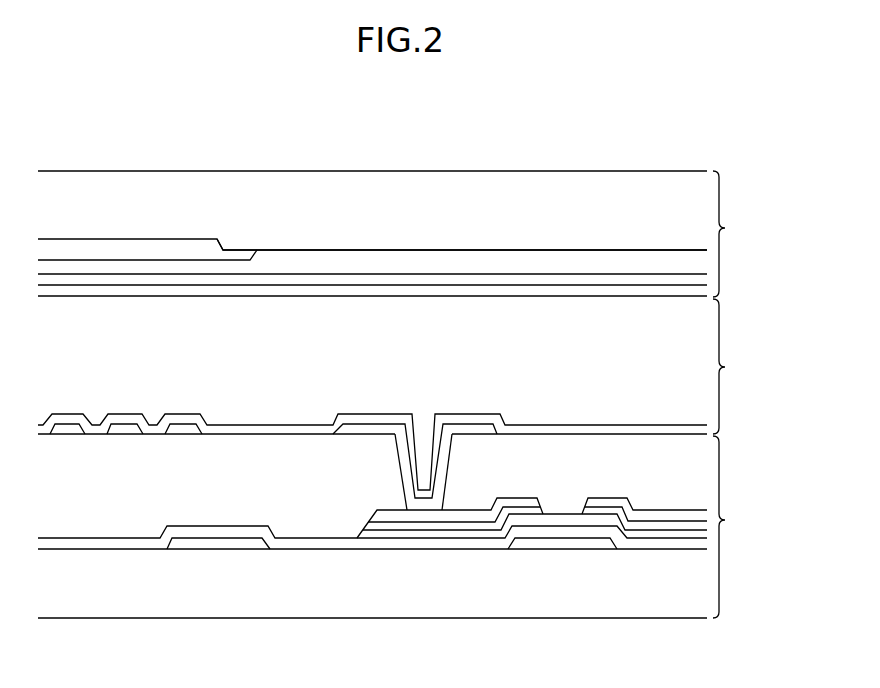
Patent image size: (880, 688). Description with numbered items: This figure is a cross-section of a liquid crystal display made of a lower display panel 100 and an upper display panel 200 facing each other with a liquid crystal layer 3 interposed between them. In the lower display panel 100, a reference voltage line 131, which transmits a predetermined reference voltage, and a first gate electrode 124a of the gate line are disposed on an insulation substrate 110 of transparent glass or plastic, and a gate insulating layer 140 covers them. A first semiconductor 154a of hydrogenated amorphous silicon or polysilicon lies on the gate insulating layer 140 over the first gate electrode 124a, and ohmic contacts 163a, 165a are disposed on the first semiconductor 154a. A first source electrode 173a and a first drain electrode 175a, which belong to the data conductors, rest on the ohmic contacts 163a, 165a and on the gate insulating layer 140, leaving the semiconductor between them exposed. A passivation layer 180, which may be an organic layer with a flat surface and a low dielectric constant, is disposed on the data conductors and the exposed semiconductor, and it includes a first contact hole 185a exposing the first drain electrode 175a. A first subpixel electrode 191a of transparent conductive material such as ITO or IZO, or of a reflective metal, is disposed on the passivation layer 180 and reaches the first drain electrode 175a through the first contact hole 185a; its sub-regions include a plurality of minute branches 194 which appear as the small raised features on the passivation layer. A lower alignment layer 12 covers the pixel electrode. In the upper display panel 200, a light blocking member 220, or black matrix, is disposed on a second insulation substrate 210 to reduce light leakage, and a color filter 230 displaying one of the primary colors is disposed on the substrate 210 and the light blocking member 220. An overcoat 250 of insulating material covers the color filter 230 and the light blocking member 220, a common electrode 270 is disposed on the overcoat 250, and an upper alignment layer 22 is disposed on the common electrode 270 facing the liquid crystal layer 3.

The liquid crystal layer 3 is at (728, 366).
The lower alignment layer 12 is at (592, 428).
The upper alignment layer 22 is at (537, 295).
The lower display panel 100 is at (737, 527).
The insulation substrate 110 is at (142, 595).
The first gate electrode 124a is at (571, 548).
The reference voltage line 131 is at (217, 543).
The gate insulating layer 140 is at (303, 543).
The first semiconductor 154a is at (530, 522).
The ohmic contact 163a is at (635, 524).
The ohmic contact 165a is at (453, 523).
The first source electrode 173a is at (661, 513).
The first drain electrode 175a is at (407, 513).
The passivation layer 180 is at (83, 508).
The first contact hole 185a is at (400, 463).
The first subpixel electrode 191a is at (359, 431).
The minute branches 194 is at (127, 431).
The upper display panel 200 is at (737, 234).
The insulation substrate 210 is at (589, 187).
The light blocking member 220 is at (511, 245).
The color filter 230 is at (149, 248).
The overcoat 250 is at (402, 260).
The common electrode 270 is at (300, 280).